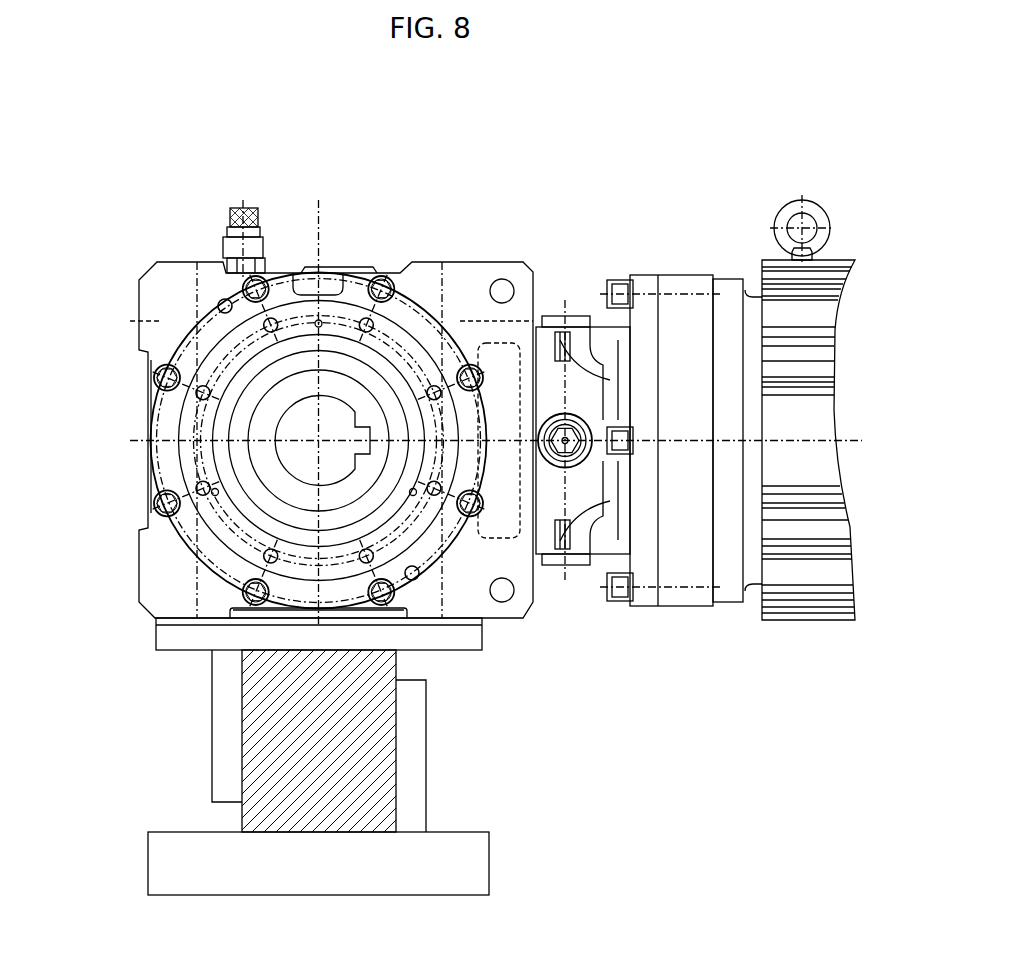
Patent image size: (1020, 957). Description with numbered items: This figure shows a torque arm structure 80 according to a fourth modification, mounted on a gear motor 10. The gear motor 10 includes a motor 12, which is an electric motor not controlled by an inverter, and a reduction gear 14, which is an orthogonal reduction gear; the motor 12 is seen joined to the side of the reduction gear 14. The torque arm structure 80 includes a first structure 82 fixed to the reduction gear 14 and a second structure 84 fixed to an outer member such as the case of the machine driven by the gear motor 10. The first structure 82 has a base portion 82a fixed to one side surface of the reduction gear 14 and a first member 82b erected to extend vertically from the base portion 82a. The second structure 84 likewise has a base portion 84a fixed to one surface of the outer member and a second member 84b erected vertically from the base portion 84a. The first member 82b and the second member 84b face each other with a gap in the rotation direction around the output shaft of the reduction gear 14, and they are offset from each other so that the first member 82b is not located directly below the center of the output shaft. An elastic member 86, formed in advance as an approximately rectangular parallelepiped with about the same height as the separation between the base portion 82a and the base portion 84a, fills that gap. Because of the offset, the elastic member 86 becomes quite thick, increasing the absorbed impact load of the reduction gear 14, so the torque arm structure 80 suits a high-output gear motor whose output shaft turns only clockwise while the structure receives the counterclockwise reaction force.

The gear motor 10 is at (670, 192).
The motor 12 is at (773, 278).
The reduction gear 14 is at (478, 283).
The torque arm structure 80 is at (683, 627).
The first structure 82 is at (70, 627).
The base portion 82a is at (172, 638).
The first member 82b is at (223, 737).
The second structure 84 is at (593, 775).
The base portion 84a is at (462, 866).
The second member 84b is at (413, 773).
The elastic member 86 is at (343, 720).